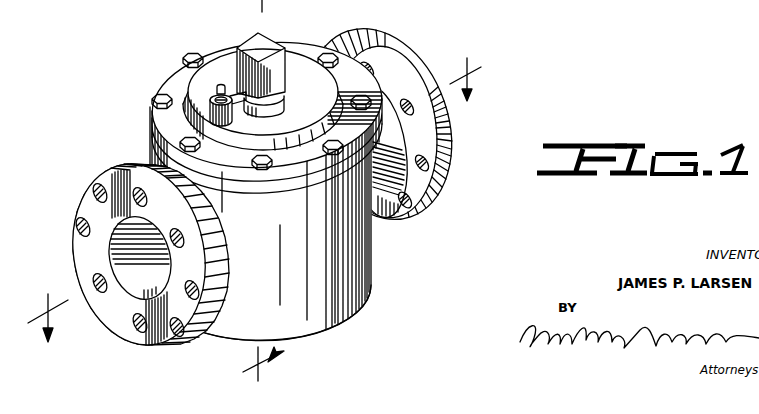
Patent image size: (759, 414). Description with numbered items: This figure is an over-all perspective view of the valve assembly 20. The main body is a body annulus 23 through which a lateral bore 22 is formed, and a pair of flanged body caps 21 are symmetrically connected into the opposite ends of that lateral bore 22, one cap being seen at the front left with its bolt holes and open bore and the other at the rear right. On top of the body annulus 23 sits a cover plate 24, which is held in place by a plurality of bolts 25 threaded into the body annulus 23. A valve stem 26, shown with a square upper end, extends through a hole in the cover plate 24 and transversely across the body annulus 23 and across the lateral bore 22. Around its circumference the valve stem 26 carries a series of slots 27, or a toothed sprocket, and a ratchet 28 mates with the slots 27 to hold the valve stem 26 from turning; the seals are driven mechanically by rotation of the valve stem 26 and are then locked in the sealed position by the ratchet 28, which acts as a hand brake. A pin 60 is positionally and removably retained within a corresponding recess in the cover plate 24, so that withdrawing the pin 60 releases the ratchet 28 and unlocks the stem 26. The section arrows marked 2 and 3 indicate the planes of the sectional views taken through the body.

The valve assembly 20 is at (375, 265).
The flanged body caps 21 is at (78, 197).
The lateral bore 22 is at (110, 262).
The body annulus 23 is at (352, 311).
The cover plate 24 is at (170, 90).
The bolts 25 is at (190, 54).
The valve stem 26 is at (275, 43).
The slots 27 is at (288, 98).
The ratchet 28 is at (240, 105).
The pin 60 is at (221, 85).
The section line 2- 2 is at (256, 192).
The section line 3- 3 is at (254, 190).